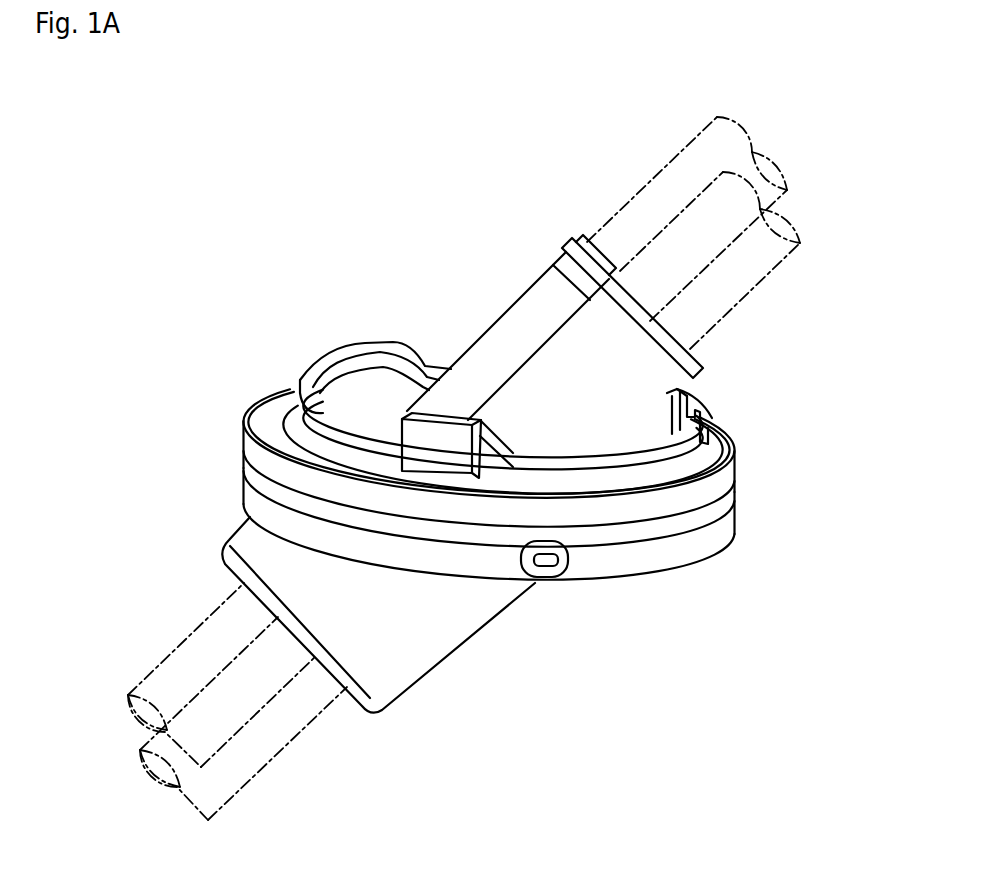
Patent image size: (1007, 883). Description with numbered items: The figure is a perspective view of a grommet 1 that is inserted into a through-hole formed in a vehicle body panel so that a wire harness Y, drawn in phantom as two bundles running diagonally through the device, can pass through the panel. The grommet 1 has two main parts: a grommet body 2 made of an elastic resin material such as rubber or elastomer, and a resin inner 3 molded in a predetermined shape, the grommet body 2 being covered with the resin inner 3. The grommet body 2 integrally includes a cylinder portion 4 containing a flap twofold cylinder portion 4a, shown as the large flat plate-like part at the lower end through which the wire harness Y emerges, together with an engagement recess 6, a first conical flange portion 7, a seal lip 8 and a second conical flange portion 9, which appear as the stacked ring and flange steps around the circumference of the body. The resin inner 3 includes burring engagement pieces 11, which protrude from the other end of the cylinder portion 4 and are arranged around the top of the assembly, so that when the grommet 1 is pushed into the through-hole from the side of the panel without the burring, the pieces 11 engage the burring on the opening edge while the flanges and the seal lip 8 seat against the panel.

The grommet 1 is at (436, 226).
The grommet body 2 is at (458, 342).
The resin inner 3 is at (604, 481).
The cylinder portion 4 is at (507, 311).
The flap twofold cylinder portion 4a is at (466, 639).
The engagement recess 6 is at (683, 550).
The first conical flange portion 7 is at (693, 488).
The seal lip 8 is at (282, 390).
The second conical flange portion 9 is at (738, 439).
The burring engagement piece 11 is at (366, 343).
The wire harness Y is at (297, 738).